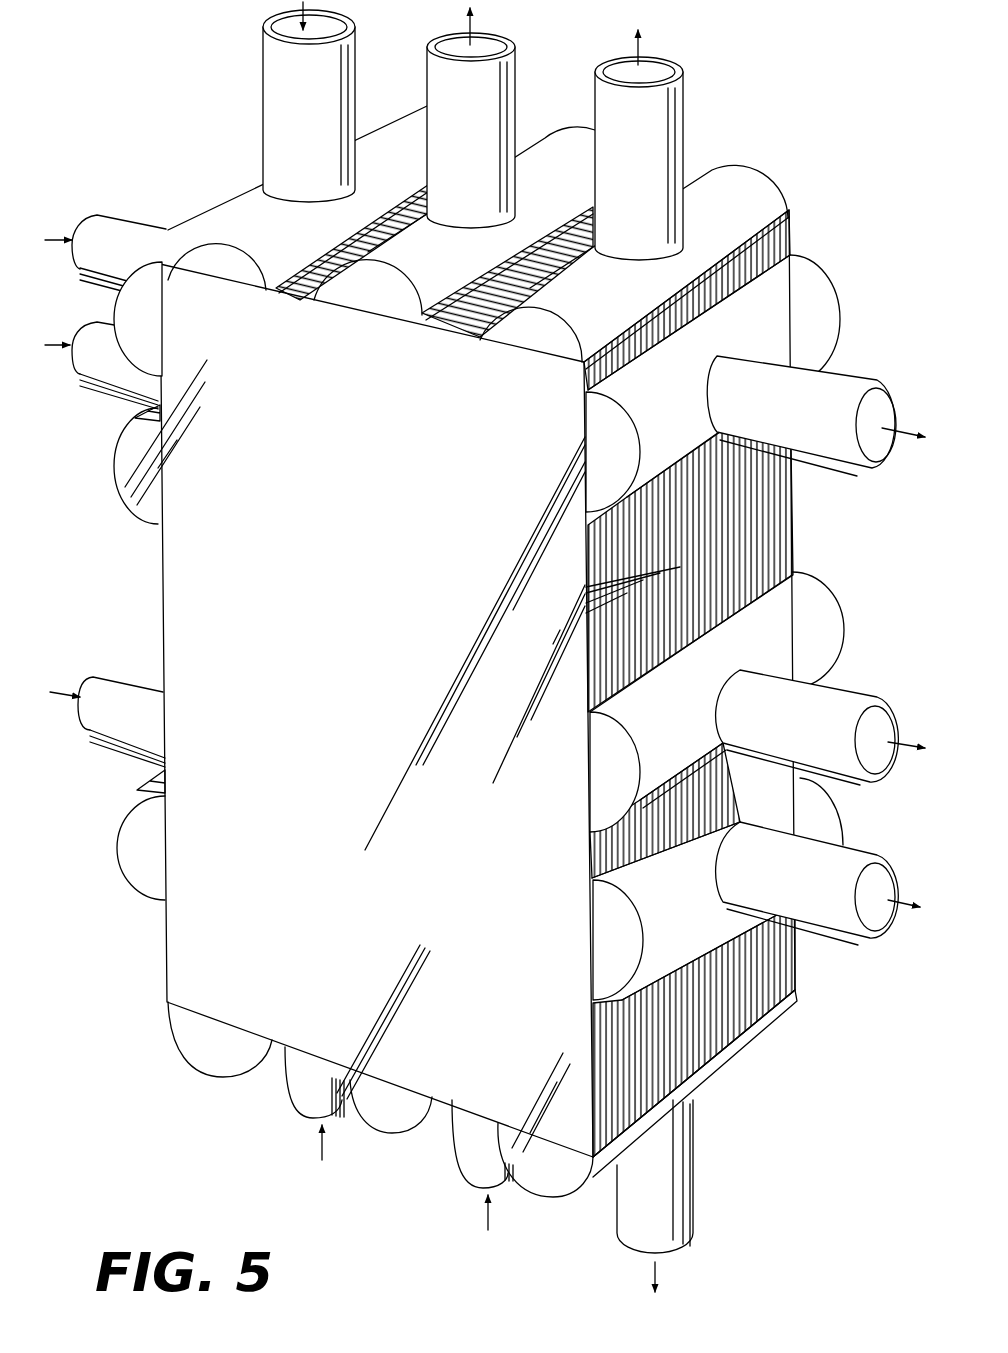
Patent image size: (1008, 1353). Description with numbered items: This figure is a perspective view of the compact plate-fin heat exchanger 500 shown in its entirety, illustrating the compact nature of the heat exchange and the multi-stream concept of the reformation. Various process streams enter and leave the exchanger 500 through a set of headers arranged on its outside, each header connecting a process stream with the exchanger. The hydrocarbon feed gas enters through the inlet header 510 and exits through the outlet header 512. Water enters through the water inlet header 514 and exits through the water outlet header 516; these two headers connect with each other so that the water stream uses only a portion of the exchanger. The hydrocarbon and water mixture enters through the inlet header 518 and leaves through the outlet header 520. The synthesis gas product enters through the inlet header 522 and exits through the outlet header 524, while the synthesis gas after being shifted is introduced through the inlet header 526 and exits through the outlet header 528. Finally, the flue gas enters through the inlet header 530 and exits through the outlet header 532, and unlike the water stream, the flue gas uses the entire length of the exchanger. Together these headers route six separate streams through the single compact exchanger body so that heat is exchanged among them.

The plate-fin heat exchanger 500 is at (150, 630).
The inlet header 510 is at (224, 198).
The outlet header 512 is at (840, 807).
The water inlet header 514 is at (98, 282).
The water outlet header 516 is at (808, 573).
The inlet header 518 is at (120, 487).
The outlet header 520 is at (708, 1083).
The inlet header 522 is at (200, 1063).
The outlet header 524 is at (830, 286).
The inlet header 526 is at (120, 807).
The outlet header 528 is at (708, 164).
The inlet header 530 is at (363, 1128).
The outlet header 532 is at (542, 142).